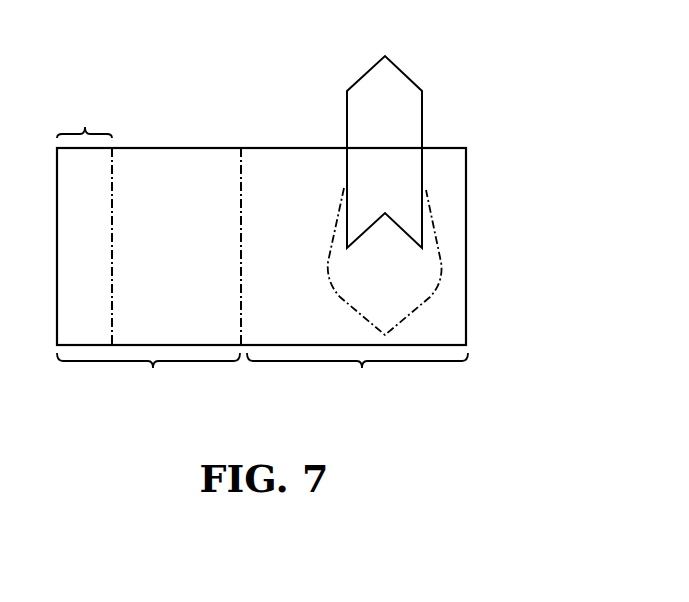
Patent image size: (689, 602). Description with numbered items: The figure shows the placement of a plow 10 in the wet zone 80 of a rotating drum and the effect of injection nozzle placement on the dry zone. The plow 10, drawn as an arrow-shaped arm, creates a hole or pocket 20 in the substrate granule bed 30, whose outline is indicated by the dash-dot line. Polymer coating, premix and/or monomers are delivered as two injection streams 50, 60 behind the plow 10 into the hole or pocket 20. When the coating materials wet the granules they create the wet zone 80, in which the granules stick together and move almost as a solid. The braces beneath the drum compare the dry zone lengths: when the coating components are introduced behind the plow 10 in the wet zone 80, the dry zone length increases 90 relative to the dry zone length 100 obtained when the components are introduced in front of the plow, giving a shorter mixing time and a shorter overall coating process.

The plow 10 is at (367, 70).
The hole or pocket 20 is at (382, 265).
The substrate granule bed 30 is at (422, 300).
The polymer coating, premix and/or monomer injection stream 50 is at (398, 238).
The polymer coating, premix and/or monomer injection stream 60 is at (373, 235).
The wet zone 80 is at (357, 376).
The dry zone length with injection behind the plow 90 is at (148, 376).
The dry zone length with injection in front of the plow 100 is at (84, 115).